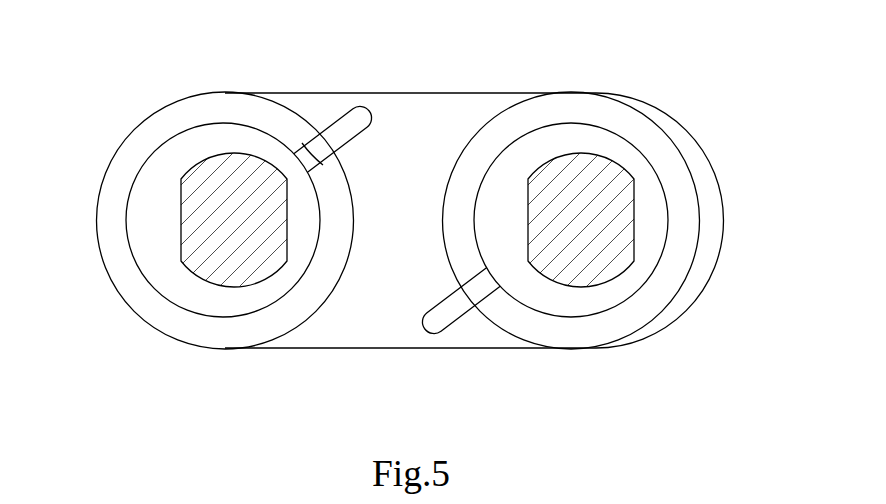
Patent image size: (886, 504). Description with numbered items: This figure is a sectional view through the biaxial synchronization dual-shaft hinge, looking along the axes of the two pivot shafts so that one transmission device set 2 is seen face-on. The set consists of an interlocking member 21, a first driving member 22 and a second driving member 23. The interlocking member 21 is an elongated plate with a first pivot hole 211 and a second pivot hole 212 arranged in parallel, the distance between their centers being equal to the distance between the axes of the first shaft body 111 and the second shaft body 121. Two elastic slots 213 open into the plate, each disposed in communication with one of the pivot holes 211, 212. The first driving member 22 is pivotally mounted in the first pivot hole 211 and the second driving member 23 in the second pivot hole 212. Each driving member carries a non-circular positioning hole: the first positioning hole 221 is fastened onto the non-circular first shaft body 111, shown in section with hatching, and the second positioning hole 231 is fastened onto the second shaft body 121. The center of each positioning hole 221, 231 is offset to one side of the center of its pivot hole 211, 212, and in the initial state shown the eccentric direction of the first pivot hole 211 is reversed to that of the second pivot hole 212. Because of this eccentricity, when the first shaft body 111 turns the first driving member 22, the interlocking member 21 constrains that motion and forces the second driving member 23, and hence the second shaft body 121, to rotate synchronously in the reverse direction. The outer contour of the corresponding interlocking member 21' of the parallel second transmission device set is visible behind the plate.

The transmission device set 2 is at (486, 94).
The interlocking member 21 is at (212, 194).
The interlocking member 21' is at (624, 220).
The first pivot hole 211 is at (133, 258).
The second pivot hole 212 is at (583, 318).
The elastic slot 213 is at (328, 123).
The first driving member 22 is at (183, 289).
The second driving member 23 is at (622, 292).
The first positioning hole 221 is at (181, 231).
The second positioning hole 231 is at (637, 218).
The first shaft body 111 is at (186, 210).
The second shaft body 121 is at (616, 175).